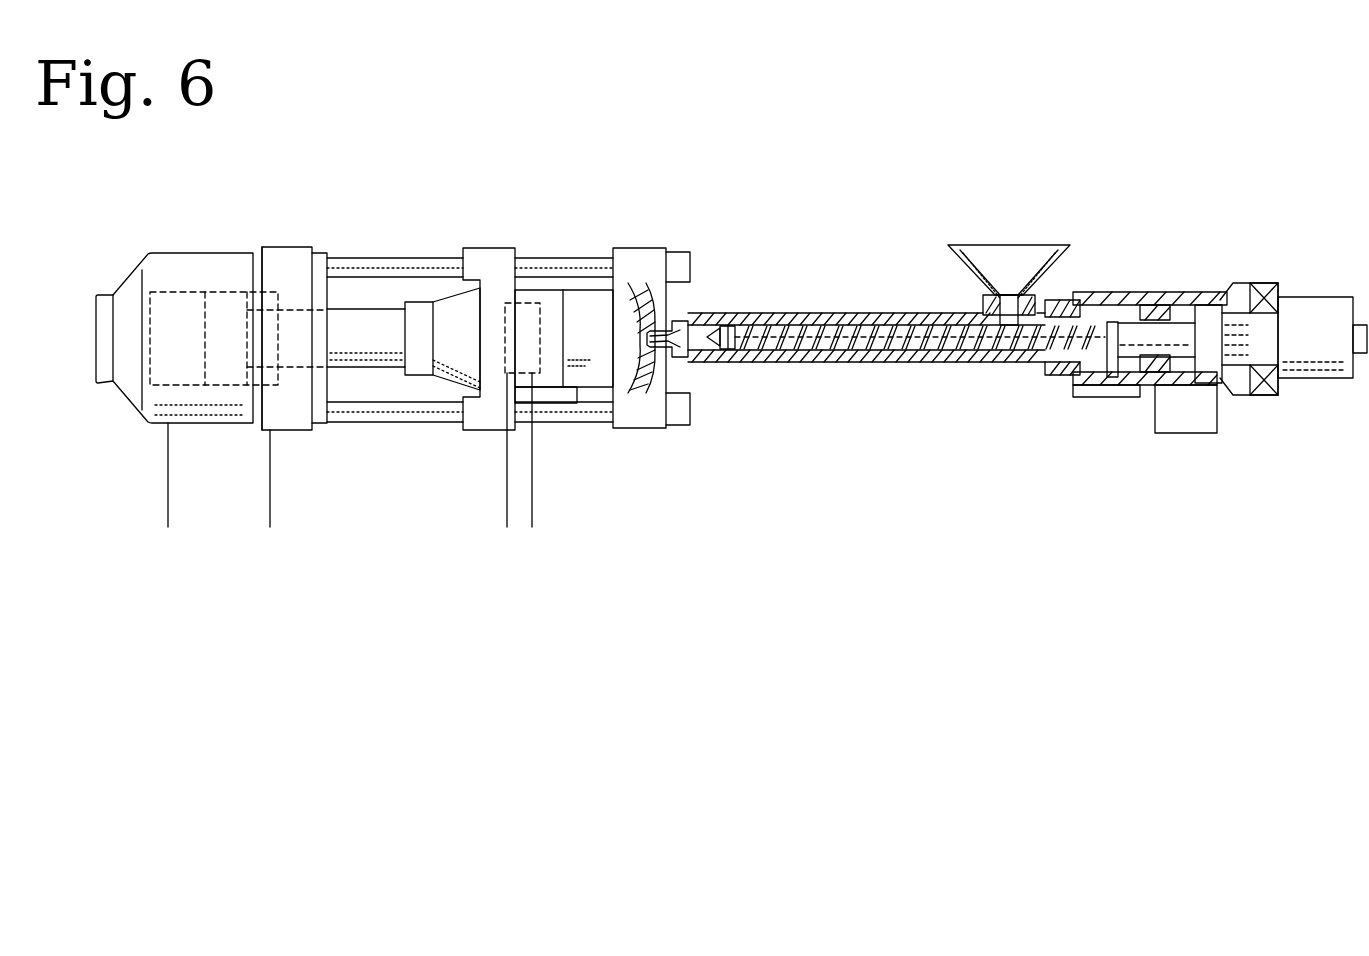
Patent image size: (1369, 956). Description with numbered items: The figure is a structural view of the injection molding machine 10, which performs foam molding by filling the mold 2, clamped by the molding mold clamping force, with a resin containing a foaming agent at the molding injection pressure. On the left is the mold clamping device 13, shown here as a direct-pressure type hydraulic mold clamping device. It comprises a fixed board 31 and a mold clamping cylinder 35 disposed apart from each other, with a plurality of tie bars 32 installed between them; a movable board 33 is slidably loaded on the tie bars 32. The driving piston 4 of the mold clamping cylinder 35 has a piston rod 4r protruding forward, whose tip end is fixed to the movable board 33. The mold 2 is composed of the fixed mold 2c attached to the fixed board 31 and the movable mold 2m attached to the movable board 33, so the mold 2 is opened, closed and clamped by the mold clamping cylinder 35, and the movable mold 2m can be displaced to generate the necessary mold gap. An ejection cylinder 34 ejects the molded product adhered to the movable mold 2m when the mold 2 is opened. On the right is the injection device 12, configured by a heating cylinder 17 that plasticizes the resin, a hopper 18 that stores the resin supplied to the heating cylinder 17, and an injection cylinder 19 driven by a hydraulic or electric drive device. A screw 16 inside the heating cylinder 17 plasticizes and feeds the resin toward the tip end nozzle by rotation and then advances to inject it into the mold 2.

The injection molding machine 10 is at (798, 684).
The injection device 12 is at (1066, 550).
The mold clamping device 13 is at (418, 573).
The screw 16 is at (977, 340).
The heating cylinder 17 is at (925, 364).
The hopper 18 is at (1010, 245).
The injection cylinder 19 is at (1205, 292).
The mold 2 is at (580, 290).
The movable mold 2m is at (540, 392).
The fixed mold 2c is at (577, 392).
The fixed board 31 is at (645, 248).
The tie bars 32 is at (417, 258).
The movable board 33 is at (500, 248).
The ejection cylinder 34 is at (490, 338).
The mold clamping cylinder 35 is at (168, 288).
The driving piston 4 is at (203, 357).
The piston rod 4r is at (365, 309).